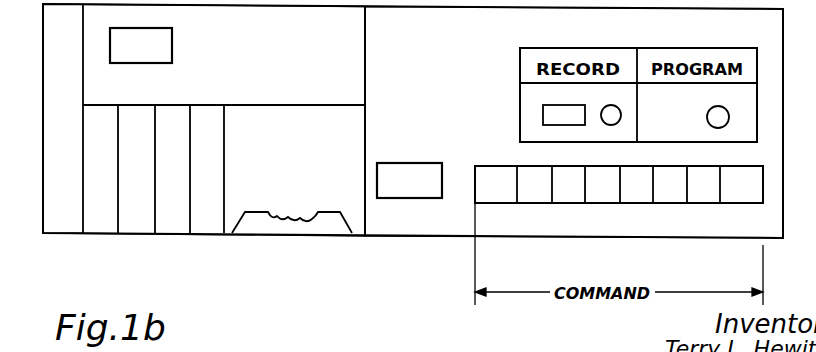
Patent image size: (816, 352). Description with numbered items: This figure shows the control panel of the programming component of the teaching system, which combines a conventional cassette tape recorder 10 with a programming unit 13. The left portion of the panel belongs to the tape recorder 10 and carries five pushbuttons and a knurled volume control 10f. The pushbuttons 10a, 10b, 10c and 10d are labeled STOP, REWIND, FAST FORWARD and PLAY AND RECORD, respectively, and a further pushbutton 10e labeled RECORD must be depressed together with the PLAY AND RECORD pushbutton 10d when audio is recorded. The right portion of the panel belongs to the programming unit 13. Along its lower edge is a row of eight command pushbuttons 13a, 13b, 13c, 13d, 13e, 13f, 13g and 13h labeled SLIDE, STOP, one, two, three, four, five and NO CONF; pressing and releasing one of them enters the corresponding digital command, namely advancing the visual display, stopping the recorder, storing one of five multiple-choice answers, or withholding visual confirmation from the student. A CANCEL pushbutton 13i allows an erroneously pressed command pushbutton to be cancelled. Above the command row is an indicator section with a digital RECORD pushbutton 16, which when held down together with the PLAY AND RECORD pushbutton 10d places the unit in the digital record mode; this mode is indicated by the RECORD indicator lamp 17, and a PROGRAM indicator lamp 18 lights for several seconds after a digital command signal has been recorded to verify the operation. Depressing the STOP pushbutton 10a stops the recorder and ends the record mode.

The cassette tape recorder 10 is at (236, 71).
The STOP pushbutton 10a is at (102, 226).
The REWIND pushbutton 10b is at (141, 226).
The FAST FORWARD pushbutton 10c is at (178, 226).
The PLAY AND RECORD pushbutton 10d is at (208, 226).
The RECORD pushbutton 10e is at (110, 47).
The knurled volume control 10f is at (300, 228).
The programming unit 13 is at (466, 113).
The SLIDE command pushbutton 13a is at (502, 204).
The STOP command pushbutton 13b is at (532, 204).
The command pushbutton 1 13c is at (566, 204).
The command pushbutton 2 13d is at (597, 204).
The command pushbutton 3 13e is at (634, 204).
The command pushbutton 4 13f is at (673, 204).
The command pushbutton 5 13g is at (710, 204).
The NO CONF command pushbutton 13h is at (757, 204).
The CANCEL pushbutton 13i is at (412, 200).
The digital RECORD pushbutton 16 is at (543, 118).
The RECORD indicator lamp 17 is at (604, 107).
The PROGRAM indicator lamp 18 is at (708, 122).